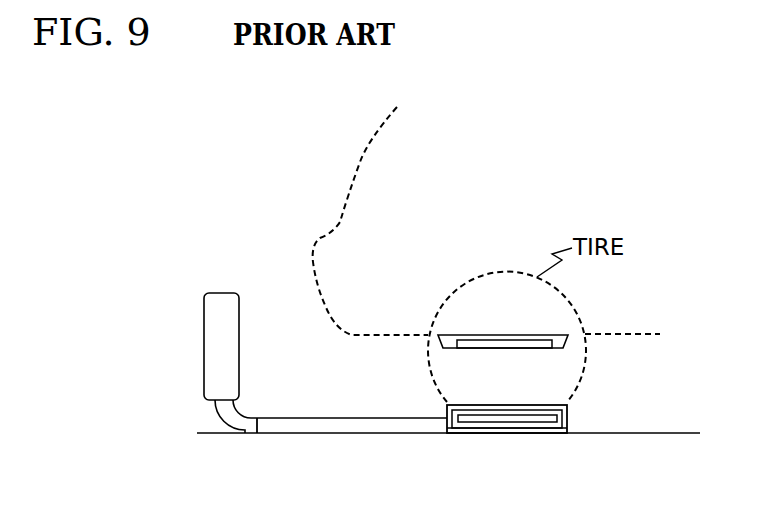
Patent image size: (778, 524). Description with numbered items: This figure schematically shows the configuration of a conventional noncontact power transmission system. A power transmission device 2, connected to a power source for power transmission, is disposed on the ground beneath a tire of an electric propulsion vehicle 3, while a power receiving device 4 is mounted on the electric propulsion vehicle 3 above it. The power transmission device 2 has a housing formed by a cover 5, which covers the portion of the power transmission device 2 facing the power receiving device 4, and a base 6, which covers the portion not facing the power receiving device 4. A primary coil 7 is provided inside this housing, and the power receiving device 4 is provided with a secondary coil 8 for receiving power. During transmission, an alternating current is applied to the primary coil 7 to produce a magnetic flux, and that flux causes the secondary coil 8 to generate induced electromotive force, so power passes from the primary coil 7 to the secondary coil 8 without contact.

The power transmission device 2 is at (440, 425).
The electric propulsion vehicle 3 is at (322, 240).
The power receiving device 4 is at (465, 335).
The cover 5 is at (568, 420).
The base 6 is at (512, 434).
The primary coil 7 is at (480, 422).
The secondary coil 8 is at (507, 340).